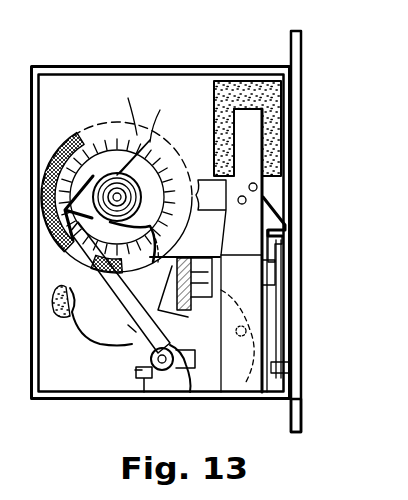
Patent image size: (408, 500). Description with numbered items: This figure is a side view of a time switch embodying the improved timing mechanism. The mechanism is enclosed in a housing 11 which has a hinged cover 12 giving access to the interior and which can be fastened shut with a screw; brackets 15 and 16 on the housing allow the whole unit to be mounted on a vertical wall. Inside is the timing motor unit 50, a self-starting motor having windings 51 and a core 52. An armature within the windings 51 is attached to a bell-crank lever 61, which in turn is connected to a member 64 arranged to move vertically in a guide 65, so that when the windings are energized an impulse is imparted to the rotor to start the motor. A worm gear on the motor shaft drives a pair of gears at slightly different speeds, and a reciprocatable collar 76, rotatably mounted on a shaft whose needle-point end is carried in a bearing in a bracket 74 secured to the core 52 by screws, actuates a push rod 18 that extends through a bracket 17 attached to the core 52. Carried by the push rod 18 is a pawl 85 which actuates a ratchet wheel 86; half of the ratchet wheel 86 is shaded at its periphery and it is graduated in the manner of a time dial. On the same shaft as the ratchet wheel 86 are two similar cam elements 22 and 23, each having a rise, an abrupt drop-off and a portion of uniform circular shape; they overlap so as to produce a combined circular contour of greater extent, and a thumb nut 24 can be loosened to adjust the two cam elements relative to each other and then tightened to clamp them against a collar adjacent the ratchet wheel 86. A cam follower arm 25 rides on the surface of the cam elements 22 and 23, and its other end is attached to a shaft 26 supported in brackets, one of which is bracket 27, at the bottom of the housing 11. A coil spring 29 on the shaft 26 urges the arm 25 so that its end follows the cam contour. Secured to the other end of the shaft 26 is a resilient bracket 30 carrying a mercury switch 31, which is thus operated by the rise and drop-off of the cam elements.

The housing 11 is at (143, 66).
The hinged cover 12 is at (31, 42).
The bracket 15 is at (302, 40).
The bracket 16 is at (302, 420).
The bracket 17 is at (168, 308).
The push rod 18 is at (198, 270).
The cam element 22 is at (132, 103).
The cam element 23 is at (146, 120).
The thumb nut 24 is at (80, 132).
The cam follower arm 25 is at (82, 262).
The shaft 26 is at (160, 385).
The bracket 27 is at (192, 380).
The coil spring 29 is at (127, 330).
The resilient bracket 30 is at (188, 366).
The mercury switch 31 is at (80, 328).
The timing motor unit 50 is at (274, 190).
The windings 51 is at (228, 80).
The core 52 is at (258, 122).
The bell-crank lever 61 is at (278, 216).
The member 64 is at (282, 297).
The guide 65 is at (282, 366).
The bracket 74 is at (268, 258).
The collar 76 is at (211, 217).
The pawl 85 is at (162, 244).
The ratchet wheel 86 is at (161, 132).